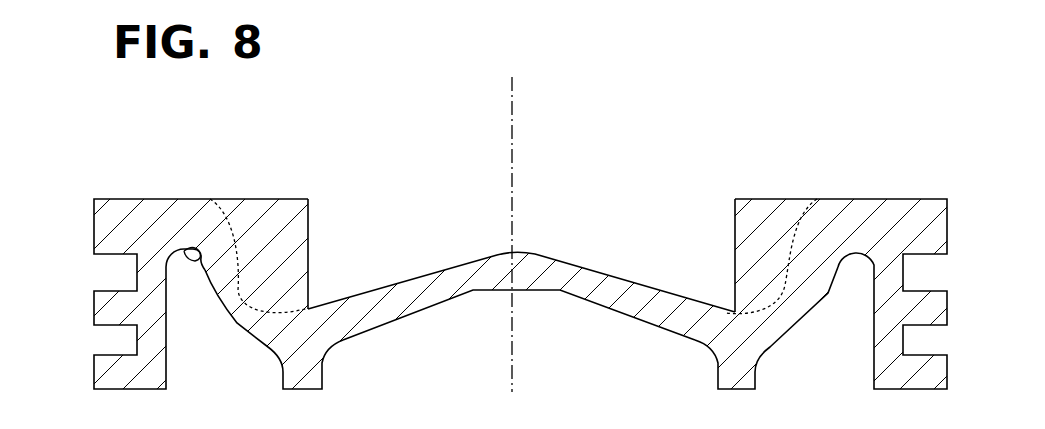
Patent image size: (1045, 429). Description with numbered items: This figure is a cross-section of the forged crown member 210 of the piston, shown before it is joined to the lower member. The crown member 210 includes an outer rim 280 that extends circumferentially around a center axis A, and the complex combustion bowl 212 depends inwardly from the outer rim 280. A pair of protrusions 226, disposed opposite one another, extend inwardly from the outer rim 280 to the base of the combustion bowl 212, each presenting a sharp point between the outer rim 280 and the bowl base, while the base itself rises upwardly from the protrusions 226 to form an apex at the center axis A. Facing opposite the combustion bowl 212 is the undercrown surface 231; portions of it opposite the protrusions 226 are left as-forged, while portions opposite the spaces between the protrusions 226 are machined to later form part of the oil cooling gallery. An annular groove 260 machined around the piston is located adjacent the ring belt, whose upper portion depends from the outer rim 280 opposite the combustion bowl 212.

The crown member 210 is at (157, 192).
The combustion bowl 212 is at (578, 265).
The protrusion 226 is at (255, 199).
The undercrown surface 231 is at (237, 323).
The annular groove 260 is at (200, 257).
The outer rim 280 is at (837, 199).
The central axis A is at (513, 122).